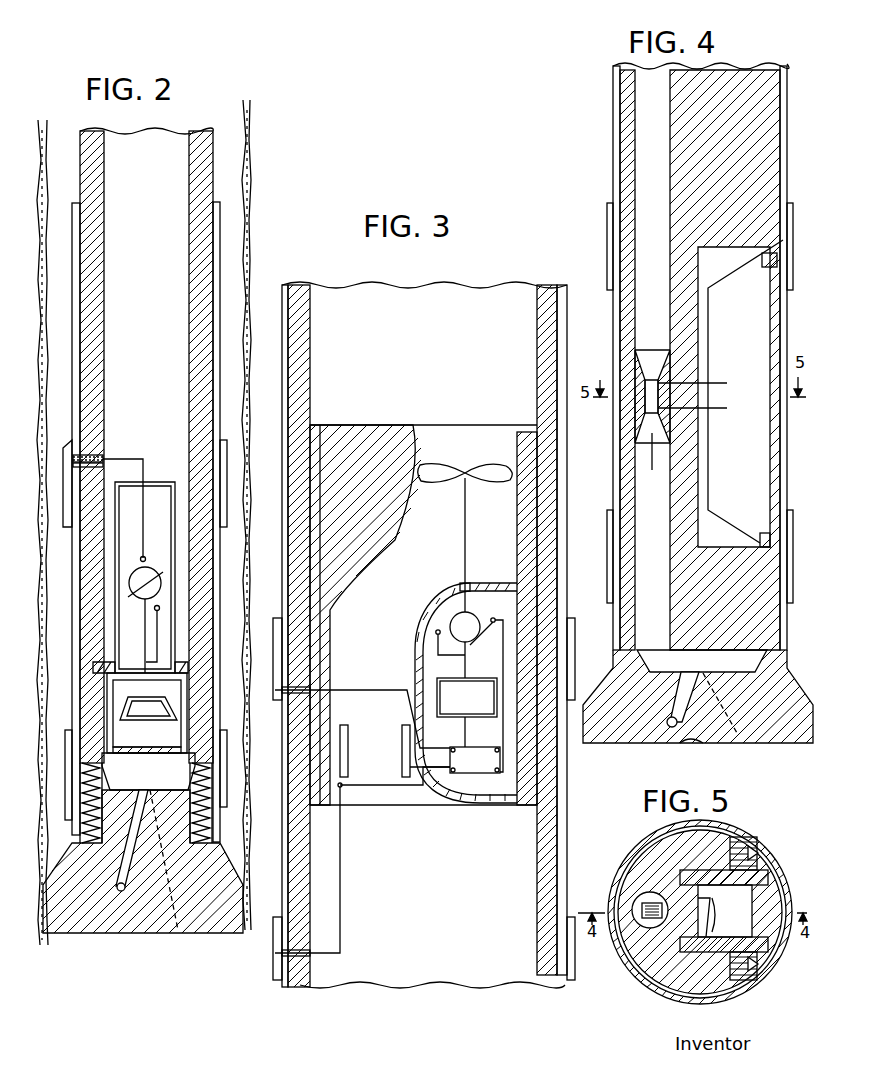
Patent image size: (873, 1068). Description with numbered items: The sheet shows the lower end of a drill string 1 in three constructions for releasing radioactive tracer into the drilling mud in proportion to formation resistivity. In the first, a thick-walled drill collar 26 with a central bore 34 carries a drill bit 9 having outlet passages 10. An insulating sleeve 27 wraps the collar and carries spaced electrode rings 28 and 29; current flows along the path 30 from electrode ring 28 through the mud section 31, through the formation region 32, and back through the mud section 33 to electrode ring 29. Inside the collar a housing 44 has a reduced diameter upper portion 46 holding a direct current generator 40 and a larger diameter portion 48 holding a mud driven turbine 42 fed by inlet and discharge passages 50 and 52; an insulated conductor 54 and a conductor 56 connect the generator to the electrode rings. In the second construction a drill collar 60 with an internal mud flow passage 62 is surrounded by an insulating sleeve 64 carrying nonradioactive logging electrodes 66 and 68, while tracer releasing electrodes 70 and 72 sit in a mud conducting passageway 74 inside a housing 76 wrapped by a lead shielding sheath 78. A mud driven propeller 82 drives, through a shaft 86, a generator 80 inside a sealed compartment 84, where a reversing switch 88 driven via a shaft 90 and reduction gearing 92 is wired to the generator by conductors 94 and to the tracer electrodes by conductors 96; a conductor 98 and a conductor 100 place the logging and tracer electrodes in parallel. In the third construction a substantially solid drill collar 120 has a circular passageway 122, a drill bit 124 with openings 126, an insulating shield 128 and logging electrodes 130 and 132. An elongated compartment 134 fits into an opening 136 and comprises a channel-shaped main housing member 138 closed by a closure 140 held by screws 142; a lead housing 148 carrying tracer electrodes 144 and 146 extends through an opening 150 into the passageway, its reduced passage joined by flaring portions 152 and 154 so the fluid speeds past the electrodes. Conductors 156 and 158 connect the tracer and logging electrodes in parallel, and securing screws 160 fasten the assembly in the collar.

In FIG. 2, the tubing string 1 is at (72, 203).
In FIG. 2, the drill bit 9 is at (228, 905).
In FIG. 2, the outlet passages 10 is at (118, 893).
In FIG. 2, the drill collar 26 is at (205, 171).
In FIG. 2, the insulating sleeve 27 is at (221, 212).
In FIG. 2, the electrode ring 28 is at (72, 430).
In FIG. 2, the electrode ring 29 is at (228, 812).
In FIG. 2, the current flow path 30 is at (230, 445).
In FIG. 2, the mud section 31 is at (62, 453).
In FIG. 2, the formation region 32 is at (280, 564).
In FIG. 2, the mud section 33 is at (53, 745).
In FIG. 2, the bore 34 is at (160, 216).
In FIG. 2, the direct current generator 40 is at (152, 575).
In FIG. 2, the mud driven turbine 42 is at (168, 710).
In FIG. 2, the housing 44 is at (115, 512).
In FIG. 2, the reduced diameter upper portion 46 is at (113, 530).
In FIG. 2, the larger diameter portion 48 is at (107, 710).
In FIG. 2, the inlet passage 50 is at (178, 680).
In FIG. 2, the discharge passage 52 is at (118, 738).
In FIG. 2, the insulated conductor 54 is at (143, 458).
In FIG. 2, the conductor 56 is at (112, 662).
In FIG. 3, the drill collar 60 is at (537, 332).
In FIG. 3, the internal mud flow passage 62 is at (432, 337).
In FIG. 3, the insulating sleeve 64 is at (562, 284).
In FIG. 3, the logging electrode 66 is at (573, 668).
In FIG. 3, the logging electrode 68 is at (273, 952).
In FIG. 3, the tracer releasing electrode 70 is at (402, 735).
In FIG. 3, the tracer releasing electrode 72 is at (350, 735).
In FIG. 3, the mud conducting passageway 74 is at (393, 637).
In FIG. 3, the housing 76 is at (367, 450).
In FIG. 3, the shielding sheath 78 is at (311, 425).
In FIG. 3, the generator 80 is at (472, 620).
In FIG. 3, the mud driven propeller 82 is at (498, 468).
In FIG. 3, the sealed compartment 84 is at (457, 740).
In FIG. 3, the shaft 86 is at (465, 540).
In FIG. 3, the reversing switch 88 is at (487, 773).
In FIG. 3, the shaft 90 is at (466, 737).
In FIG. 3, the reduction gearing 92 is at (485, 711).
In FIG. 3, the conductors 94 is at (500, 622).
In FIG. 3, the conductors 96 is at (390, 785).
In FIG. 3, the conductor 98 is at (375, 690).
In FIG. 3, the conductor 100 is at (342, 883).
In FIG. 4, the drill collar 120 is at (688, 113).
In FIG. 5, the drill collar 120 is at (650, 842).
In FIG. 4, the circular passageway 122 is at (640, 91).
In FIG. 4, the drill bit 124 is at (638, 720).
In FIG. 4, the openings 126 is at (735, 742).
In FIG. 4, the insulating shield 128 is at (616, 144).
In FIG. 5, the insulating shield 128 is at (642, 973).
In FIG. 4, the logging electrode 130 is at (607, 222).
In FIG. 4, the logging electrode 132 is at (791, 513).
In FIG. 5, the logging electrode 132 is at (612, 957).
In FIG. 4, the compartment 134 is at (754, 325).
In FIG. 5, the compartment 134 is at (766, 880).
In FIG. 4, the opening 136 is at (698, 300).
In FIG. 4, the main housing member 138 is at (698, 343).
In FIG. 5, the main housing member 138 is at (718, 870).
In FIG. 4, the closure 140 is at (772, 450).
In FIG. 5, the closure 140 is at (750, 905).
In FIG. 5, the screws 142 is at (752, 890).
In FIG. 4, the tracer electrode 144 is at (645, 400).
In FIG. 5, the tracer electrode 144 is at (642, 910).
In FIG. 5, the tracer electrode 146 is at (657, 923).
In FIG. 4, the housing 148 is at (618, 372).
In FIG. 5, the housing 148 is at (640, 868).
In FIG. 4, the opening 150 is at (712, 383).
In FIG. 4, the flaring portion 152 is at (655, 350).
In FIG. 4, the flaring portion 154 is at (651, 433).
In FIG. 5, the flaring portion 154 is at (682, 945).
In FIG. 4, the conductors 156 is at (703, 408).
In FIG. 5, the conductors 156 is at (722, 950).
In FIG. 4, the conductors 158 is at (760, 262).
In FIG. 5, the securing screws 160 is at (735, 842).